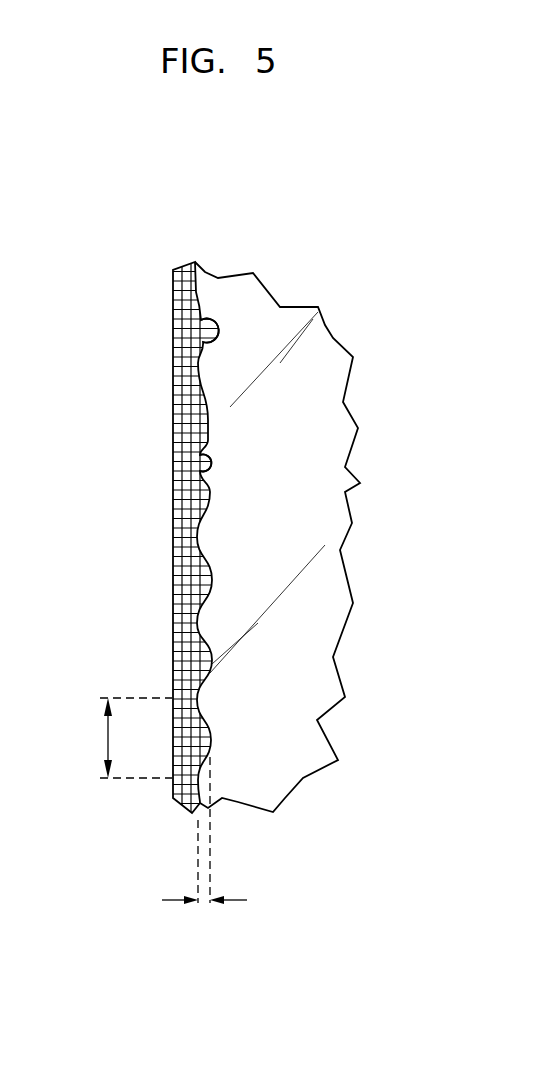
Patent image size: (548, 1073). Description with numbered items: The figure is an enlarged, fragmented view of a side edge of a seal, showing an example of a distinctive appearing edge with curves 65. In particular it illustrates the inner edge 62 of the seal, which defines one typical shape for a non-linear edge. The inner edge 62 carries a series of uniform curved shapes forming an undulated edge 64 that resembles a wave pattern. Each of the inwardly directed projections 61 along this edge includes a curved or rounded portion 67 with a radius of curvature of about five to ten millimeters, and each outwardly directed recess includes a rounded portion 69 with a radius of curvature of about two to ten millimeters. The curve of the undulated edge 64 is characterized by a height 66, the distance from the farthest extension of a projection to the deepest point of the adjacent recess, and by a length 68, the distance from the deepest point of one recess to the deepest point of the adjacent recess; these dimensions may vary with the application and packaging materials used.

The inwardly directed projections 61 is at (210, 353).
The inner edge 62 is at (245, 297).
The undulated edge 64 is at (238, 554).
The distinctive appearing edge with curves 65 is at (367, 308).
The height 66 is at (247, 900).
The rounded portion 67 is at (207, 322).
The length 68 is at (108, 740).
The rounded portion 69 is at (197, 453).